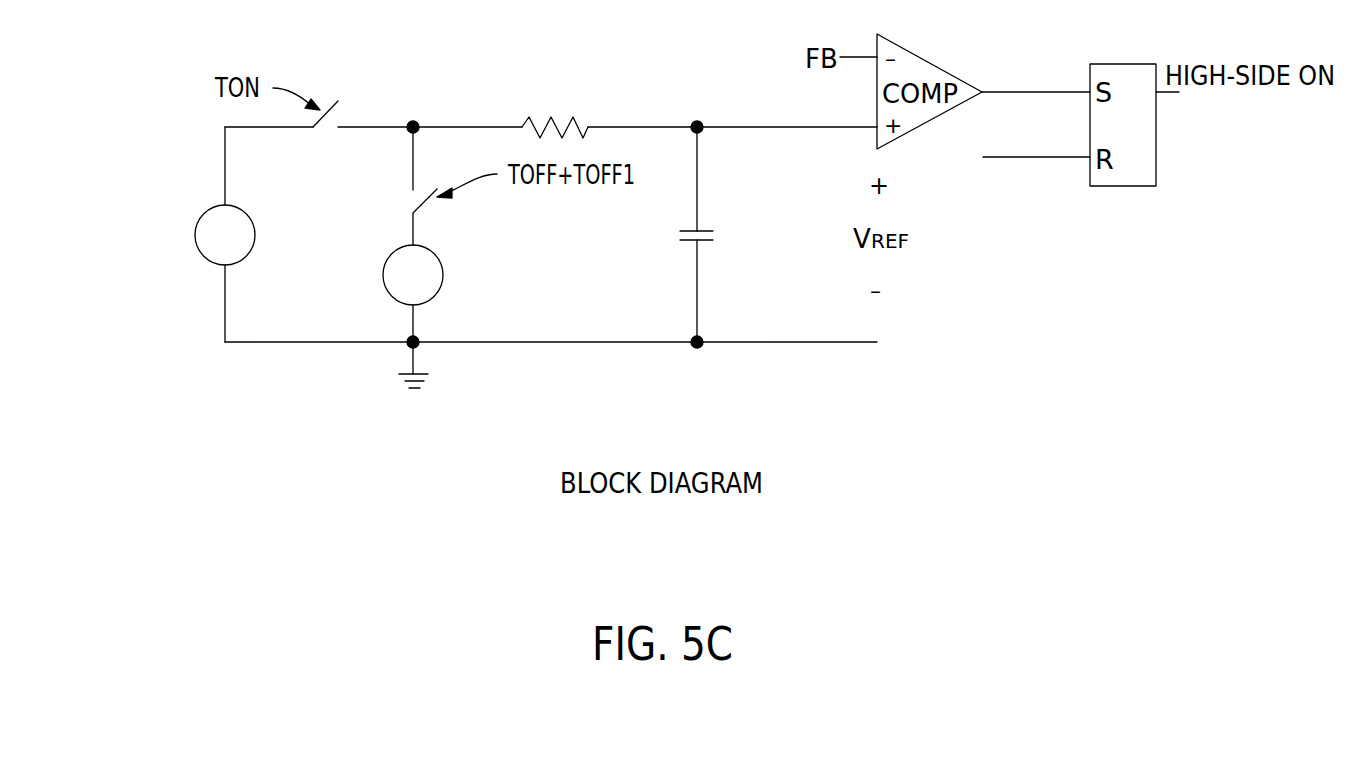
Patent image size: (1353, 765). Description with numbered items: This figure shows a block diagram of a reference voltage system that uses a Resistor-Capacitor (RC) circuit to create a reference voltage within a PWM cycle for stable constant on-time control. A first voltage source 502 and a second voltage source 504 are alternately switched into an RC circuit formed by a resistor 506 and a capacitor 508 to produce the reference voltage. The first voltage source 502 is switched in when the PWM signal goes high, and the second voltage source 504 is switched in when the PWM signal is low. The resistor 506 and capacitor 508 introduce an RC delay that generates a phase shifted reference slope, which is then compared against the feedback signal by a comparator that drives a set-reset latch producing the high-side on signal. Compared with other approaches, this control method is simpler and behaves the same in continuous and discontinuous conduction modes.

The first voltage source 502 is at (212, 205).
The second voltage source 504 is at (384, 269).
The resistor 506 is at (527, 118).
The capacitor 508 is at (692, 242).